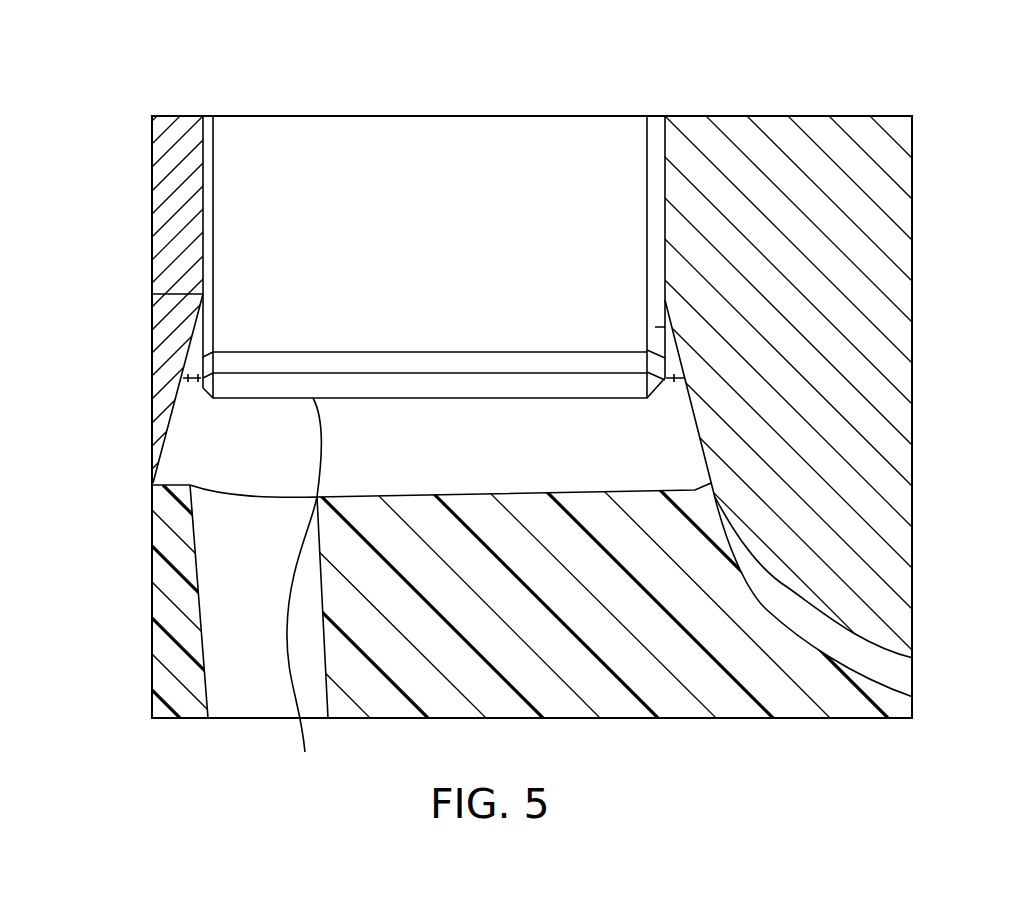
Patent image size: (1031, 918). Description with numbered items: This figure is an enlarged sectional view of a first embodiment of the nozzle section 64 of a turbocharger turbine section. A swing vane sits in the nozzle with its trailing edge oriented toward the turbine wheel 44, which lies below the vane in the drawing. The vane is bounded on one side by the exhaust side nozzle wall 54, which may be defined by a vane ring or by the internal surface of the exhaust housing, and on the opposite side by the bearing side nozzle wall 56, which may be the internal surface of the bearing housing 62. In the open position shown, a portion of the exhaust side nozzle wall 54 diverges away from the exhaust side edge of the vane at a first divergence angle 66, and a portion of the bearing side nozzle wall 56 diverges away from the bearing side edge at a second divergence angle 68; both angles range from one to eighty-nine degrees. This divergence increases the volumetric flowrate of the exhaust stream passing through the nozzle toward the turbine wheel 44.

The exhaust side nozzle wall 54 is at (665, 232).
The bearing side nozzle wall 56 is at (203, 236).
The bearing housing 62 is at (153, 358).
The second divergence angle 68 is at (192, 384).
The first divergence angle 66 is at (675, 395).
The nozzle section 64 is at (918, 222).
The turbine wheel 44 is at (653, 688).